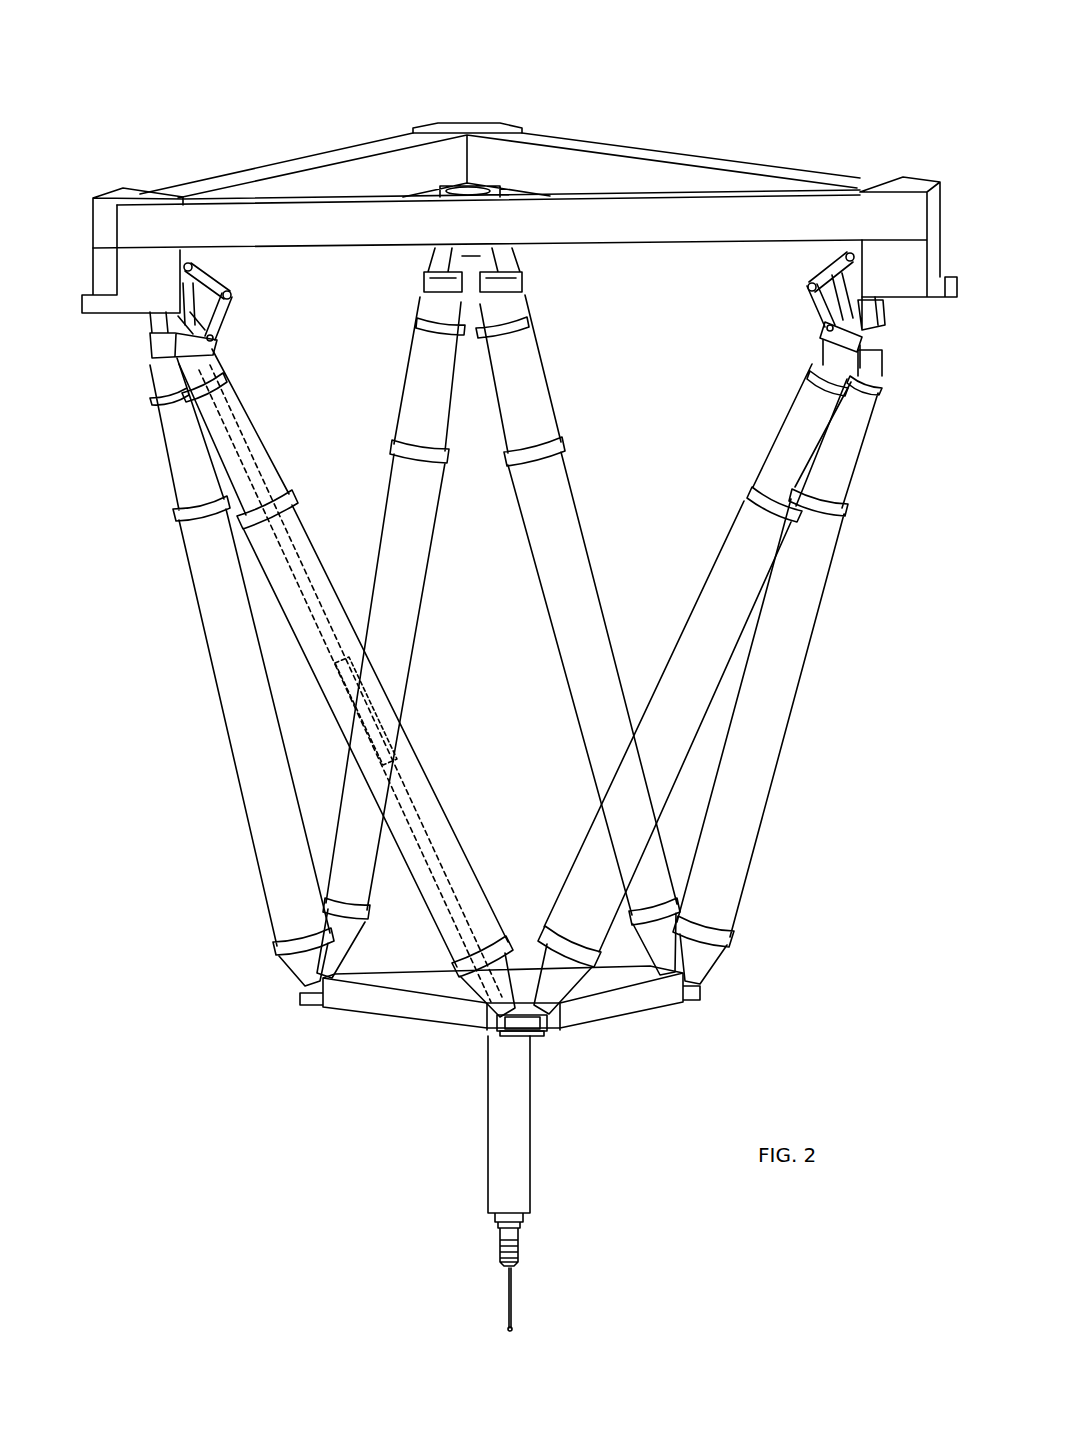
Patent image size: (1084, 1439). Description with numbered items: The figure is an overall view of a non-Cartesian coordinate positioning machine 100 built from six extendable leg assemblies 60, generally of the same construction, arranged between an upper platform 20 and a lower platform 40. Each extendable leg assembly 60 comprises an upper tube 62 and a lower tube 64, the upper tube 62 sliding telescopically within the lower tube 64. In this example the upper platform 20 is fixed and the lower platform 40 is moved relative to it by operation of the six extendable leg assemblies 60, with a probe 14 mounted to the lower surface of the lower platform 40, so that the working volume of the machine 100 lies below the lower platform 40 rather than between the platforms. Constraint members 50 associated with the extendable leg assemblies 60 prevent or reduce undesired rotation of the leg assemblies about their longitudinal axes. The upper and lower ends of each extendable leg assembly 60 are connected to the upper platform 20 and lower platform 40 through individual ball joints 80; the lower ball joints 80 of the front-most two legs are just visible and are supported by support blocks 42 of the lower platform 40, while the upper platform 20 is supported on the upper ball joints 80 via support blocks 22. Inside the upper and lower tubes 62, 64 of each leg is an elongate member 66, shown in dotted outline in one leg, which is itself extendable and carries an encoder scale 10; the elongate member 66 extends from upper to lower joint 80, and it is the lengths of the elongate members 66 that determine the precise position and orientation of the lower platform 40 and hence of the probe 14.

The non-Cartesian coordinate positioning machine 100 is at (854, 97).
The upper platform 20 is at (250, 172).
The support block 22 is at (913, 302).
The constraint member 50 is at (818, 303).
The extendable leg assembly 60 is at (185, 678).
The upper tube 62 is at (178, 455).
The lower tube 64 is at (240, 782).
The elongate member 66 is at (437, 847).
The encoder scale 10 is at (390, 762).
The lower platform 40 is at (378, 1003).
The ball joint 80 is at (492, 1018).
The support block 42 is at (546, 1032).
The probe 14 is at (500, 1147).